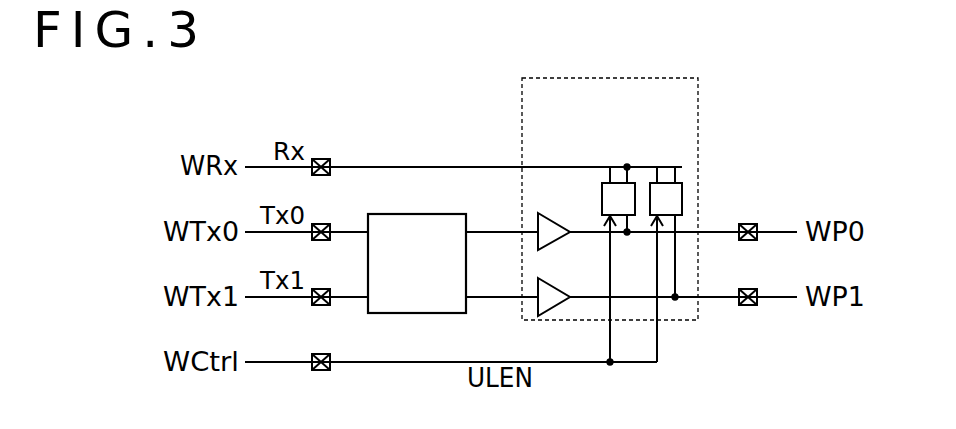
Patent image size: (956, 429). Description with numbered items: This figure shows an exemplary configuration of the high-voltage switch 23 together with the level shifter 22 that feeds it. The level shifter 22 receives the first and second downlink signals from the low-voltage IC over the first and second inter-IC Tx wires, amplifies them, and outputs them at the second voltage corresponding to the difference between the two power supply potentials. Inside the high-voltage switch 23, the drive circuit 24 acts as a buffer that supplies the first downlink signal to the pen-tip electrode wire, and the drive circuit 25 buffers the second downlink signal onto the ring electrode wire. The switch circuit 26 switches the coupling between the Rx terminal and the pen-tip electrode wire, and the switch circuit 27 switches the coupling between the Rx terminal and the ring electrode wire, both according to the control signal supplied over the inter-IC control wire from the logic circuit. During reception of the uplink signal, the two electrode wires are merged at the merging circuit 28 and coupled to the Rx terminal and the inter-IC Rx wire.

The level shifter 22 is at (393, 315).
The high-voltage switch 23 is at (686, 322).
The drive circuit 24 is at (570, 207).
The drive circuit 25 is at (570, 270).
The switch circuit 26 is at (610, 163).
The switch circuit 27 is at (657, 163).
The merging circuit 28 is at (627, 164).